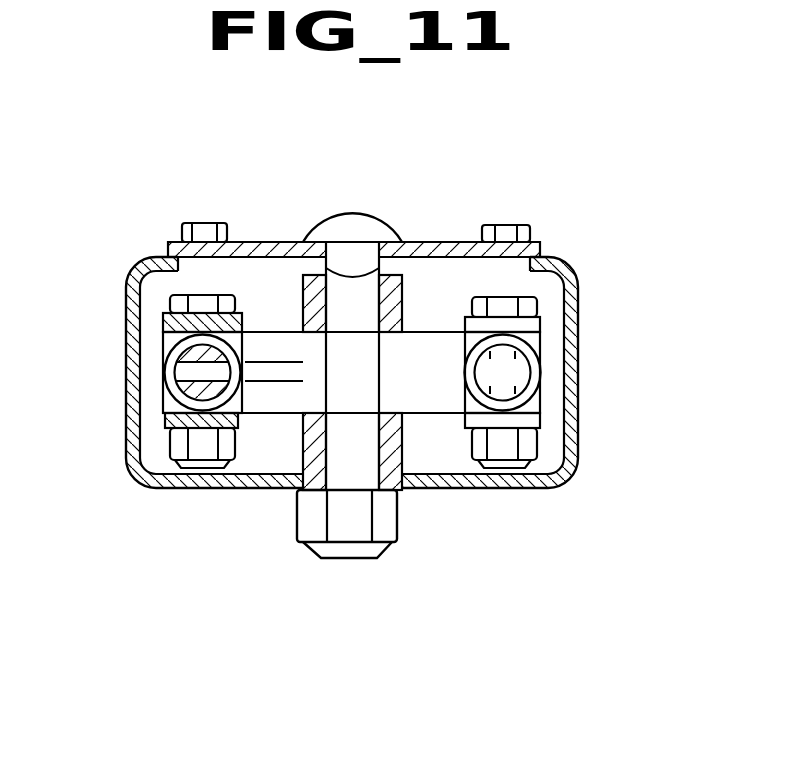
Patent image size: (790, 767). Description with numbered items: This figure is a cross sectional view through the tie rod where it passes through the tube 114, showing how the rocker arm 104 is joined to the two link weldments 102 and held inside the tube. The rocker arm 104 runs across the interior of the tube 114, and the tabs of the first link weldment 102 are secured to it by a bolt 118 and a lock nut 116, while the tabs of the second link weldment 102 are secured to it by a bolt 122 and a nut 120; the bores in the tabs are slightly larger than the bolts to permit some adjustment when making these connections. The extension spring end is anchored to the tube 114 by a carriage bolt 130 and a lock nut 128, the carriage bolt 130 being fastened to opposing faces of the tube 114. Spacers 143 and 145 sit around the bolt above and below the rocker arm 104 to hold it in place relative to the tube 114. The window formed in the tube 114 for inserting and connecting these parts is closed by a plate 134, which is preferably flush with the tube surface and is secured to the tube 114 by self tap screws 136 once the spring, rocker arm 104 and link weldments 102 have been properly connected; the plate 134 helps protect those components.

The link weldment 102 is at (165, 370).
The rocker arm 104 is at (455, 386).
The tube 114 is at (565, 487).
The lock nut 116 is at (168, 443).
The bolt 118 is at (150, 274).
The nut 120 is at (538, 440).
The bolt 122 is at (538, 300).
The lock nut 128 is at (396, 542).
The carriage bolt 130 is at (340, 216).
The plate 134 is at (453, 242).
The self tap screws 136 is at (182, 225).
The spacer 143 is at (302, 296).
The spacer 145 is at (300, 447).